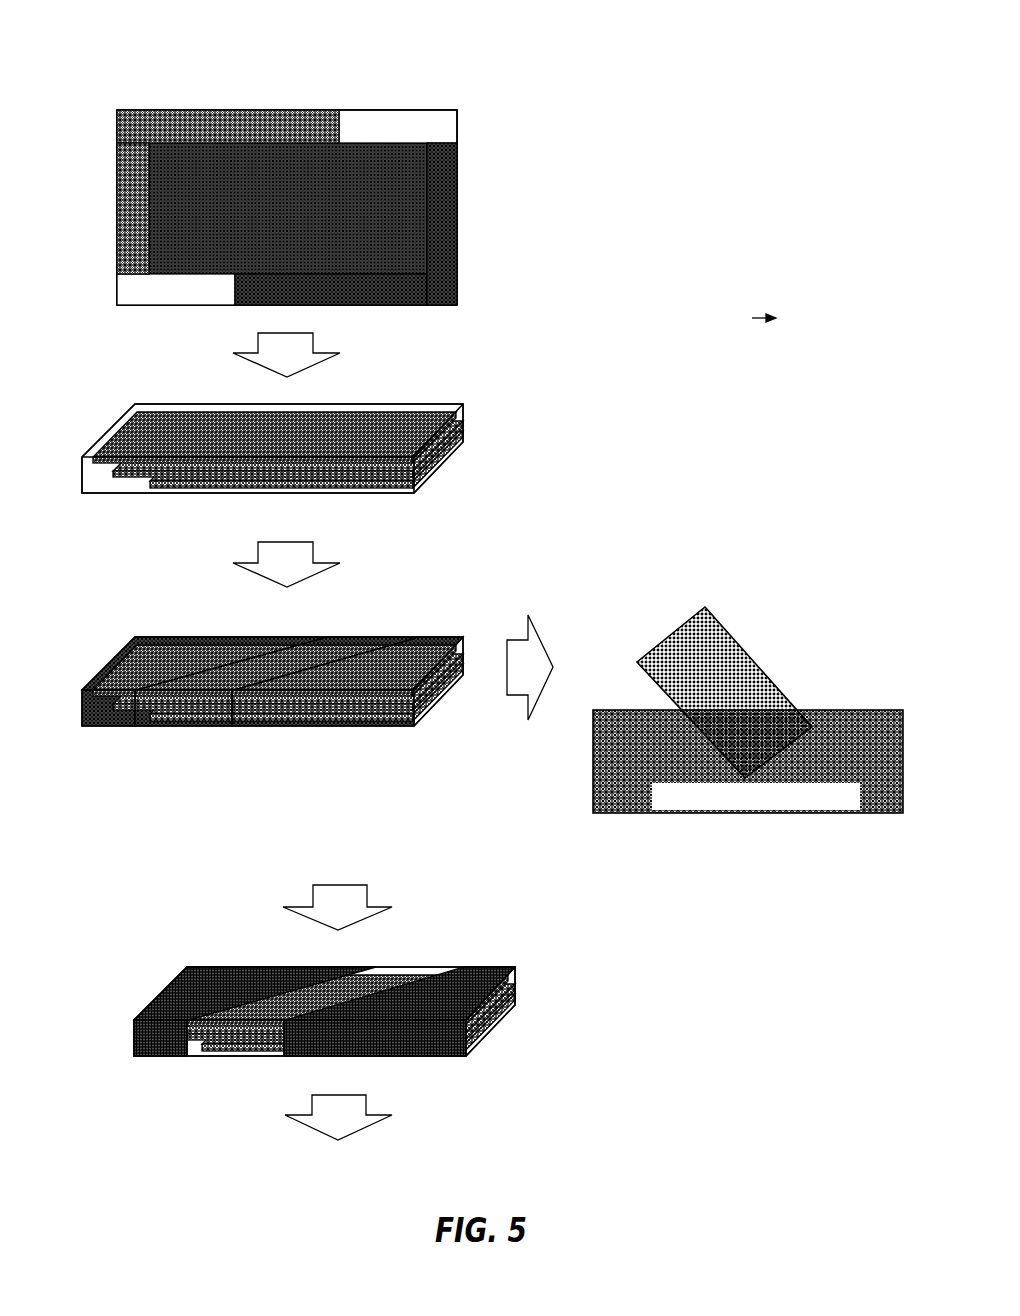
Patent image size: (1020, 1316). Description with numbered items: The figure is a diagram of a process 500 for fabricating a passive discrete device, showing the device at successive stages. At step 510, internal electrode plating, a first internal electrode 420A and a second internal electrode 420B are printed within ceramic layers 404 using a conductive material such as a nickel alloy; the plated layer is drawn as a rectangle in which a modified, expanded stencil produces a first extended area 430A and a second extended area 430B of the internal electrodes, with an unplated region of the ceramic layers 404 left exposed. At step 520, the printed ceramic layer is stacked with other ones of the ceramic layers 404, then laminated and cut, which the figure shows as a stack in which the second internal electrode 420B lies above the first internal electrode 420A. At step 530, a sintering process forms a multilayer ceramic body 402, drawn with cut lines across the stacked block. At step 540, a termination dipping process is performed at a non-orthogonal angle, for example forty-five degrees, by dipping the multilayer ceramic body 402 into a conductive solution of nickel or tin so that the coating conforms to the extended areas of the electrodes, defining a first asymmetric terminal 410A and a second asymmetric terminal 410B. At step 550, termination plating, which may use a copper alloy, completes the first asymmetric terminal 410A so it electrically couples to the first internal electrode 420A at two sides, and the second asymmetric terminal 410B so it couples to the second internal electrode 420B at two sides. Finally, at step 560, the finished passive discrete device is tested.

The process 500 is at (290, 67).
The second extended area 430B is at (222, 132).
The first extended area 430A is at (390, 288).
The ceramic layers 404 is at (180, 287).
The first internal electrode 420A is at (458, 235).
The second internal electrode 420B is at (117, 197).
The multilayer ceramic body 402 is at (418, 410).
The first asymmetric terminal 410A is at (167, 1002).
The second asymmetric terminal 410B is at (475, 968).
The step 510 is at (664, 185).
The step 520 is at (701, 357).
The step 530 is at (312, 620).
The step 540 is at (748, 651).
The step 550 is at (372, 954).
The step 560 is at (338, 1148).